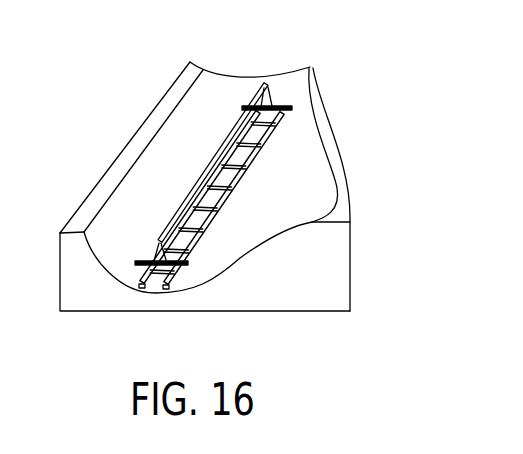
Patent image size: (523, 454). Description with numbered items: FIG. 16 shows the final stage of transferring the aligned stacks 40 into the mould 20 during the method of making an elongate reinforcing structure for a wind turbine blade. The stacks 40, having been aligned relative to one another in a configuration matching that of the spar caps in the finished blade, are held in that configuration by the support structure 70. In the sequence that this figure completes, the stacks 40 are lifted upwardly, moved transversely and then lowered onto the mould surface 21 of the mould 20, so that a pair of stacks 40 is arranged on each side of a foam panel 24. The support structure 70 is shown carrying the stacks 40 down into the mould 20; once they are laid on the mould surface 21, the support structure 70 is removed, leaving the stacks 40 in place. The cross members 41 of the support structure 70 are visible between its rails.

The mould 20 is at (161, 150).
The mould surface 21 is at (149, 230).
The foam panel 24 is at (233, 153).
The stack 40 is at (140, 286).
The cross members 41 is at (265, 128).
The support structure 70 is at (215, 187).